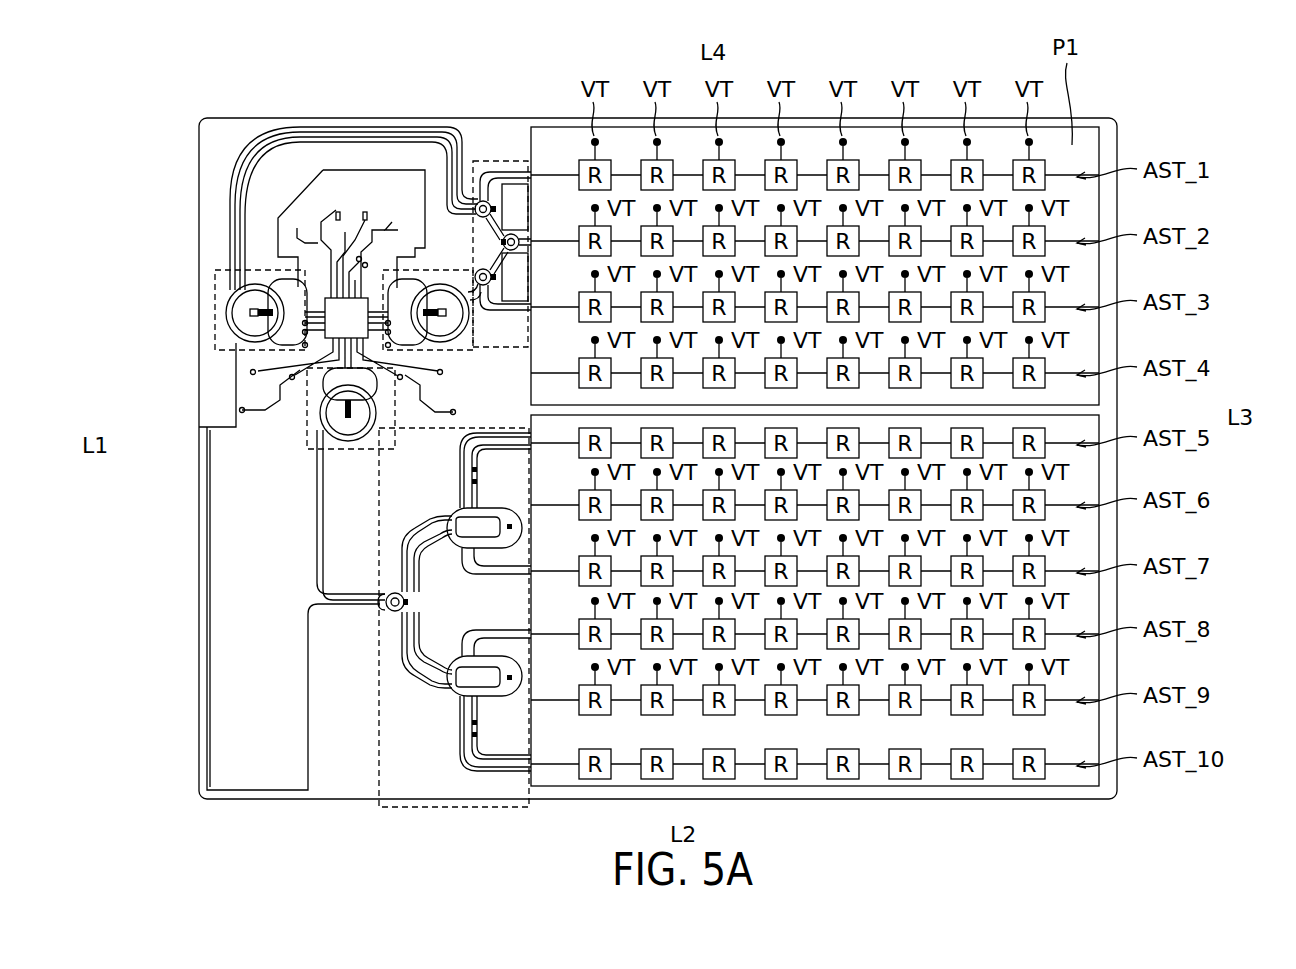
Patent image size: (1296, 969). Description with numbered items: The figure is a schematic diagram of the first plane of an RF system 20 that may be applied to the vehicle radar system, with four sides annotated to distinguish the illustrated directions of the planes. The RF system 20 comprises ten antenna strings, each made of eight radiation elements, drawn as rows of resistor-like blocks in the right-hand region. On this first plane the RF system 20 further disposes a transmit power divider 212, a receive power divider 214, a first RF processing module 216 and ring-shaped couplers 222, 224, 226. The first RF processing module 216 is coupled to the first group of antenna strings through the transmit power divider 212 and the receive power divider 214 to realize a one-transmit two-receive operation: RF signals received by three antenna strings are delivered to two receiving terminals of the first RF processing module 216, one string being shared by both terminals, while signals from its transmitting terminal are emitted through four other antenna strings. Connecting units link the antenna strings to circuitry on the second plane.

The RF system 20 is at (1165, 93).
The transmit power divider 212 is at (398, 808).
The receive power divider 214 is at (507, 160).
The first RF processing module 216 is at (347, 295).
The ring-shaped coupler 222 is at (240, 410).
The ring-shaped coupler 224 is at (472, 350).
The ring-shaped coupler 226 is at (217, 302).